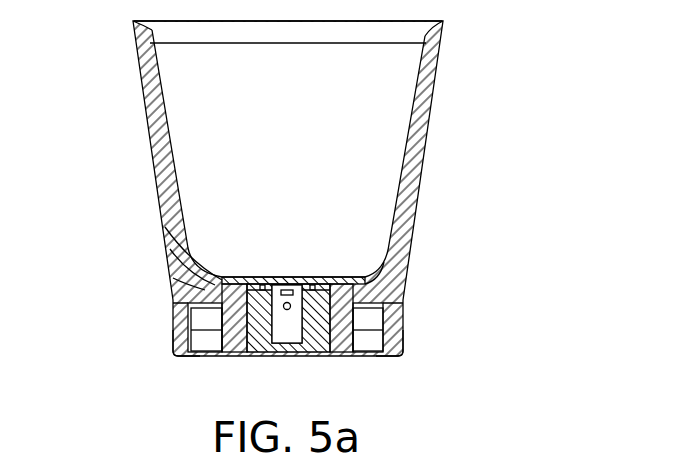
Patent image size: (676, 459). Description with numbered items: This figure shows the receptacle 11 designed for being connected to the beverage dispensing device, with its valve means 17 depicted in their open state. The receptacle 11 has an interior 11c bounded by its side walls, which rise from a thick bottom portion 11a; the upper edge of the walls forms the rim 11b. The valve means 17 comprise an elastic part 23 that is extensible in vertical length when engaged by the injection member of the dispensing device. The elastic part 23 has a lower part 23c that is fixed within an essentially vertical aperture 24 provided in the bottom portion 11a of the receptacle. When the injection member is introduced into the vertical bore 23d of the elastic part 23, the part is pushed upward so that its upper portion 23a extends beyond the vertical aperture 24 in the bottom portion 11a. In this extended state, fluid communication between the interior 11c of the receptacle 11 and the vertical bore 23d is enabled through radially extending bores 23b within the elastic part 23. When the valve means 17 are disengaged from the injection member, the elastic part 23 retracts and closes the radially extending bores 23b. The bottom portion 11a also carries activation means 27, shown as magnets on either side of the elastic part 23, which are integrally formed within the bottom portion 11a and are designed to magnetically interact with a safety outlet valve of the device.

The receptacle 11 is at (452, 30).
The bottom portion 11a is at (170, 342).
The cup rim 11b is at (133, 27).
The interior 11c is at (309, 138).
The valve means 17 is at (402, 279).
The elastic part 23 is at (398, 253).
The upper portion 23a is at (165, 227).
The radially extending bores 23b is at (170, 249).
The lower part 23c is at (173, 278).
The vertical bore 23d is at (295, 330).
The vertical aperture 24 is at (325, 346).
The activation means 27 is at (188, 320).